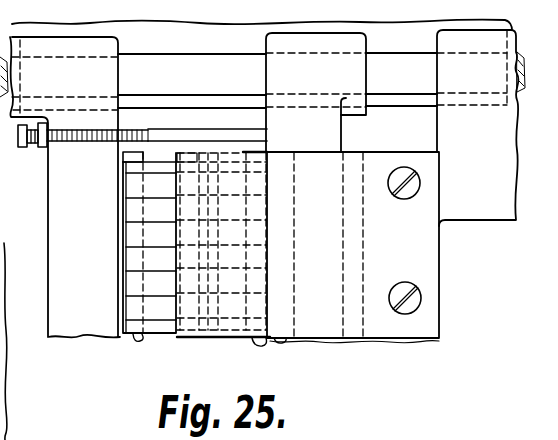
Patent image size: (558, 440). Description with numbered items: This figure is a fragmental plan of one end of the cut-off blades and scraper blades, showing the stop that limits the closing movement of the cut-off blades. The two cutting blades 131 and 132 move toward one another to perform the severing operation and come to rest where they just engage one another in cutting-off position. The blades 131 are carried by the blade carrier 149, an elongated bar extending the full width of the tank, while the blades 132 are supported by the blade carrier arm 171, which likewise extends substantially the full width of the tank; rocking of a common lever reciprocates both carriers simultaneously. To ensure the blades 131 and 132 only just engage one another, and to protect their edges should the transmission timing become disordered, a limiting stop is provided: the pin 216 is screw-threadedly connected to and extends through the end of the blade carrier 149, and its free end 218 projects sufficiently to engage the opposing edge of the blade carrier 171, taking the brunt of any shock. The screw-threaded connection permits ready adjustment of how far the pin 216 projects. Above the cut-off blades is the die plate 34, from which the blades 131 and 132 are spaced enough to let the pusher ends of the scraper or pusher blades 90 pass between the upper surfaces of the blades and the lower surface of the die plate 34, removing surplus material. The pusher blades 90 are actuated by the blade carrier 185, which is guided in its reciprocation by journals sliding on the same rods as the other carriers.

The die plate 34 is at (11, 405).
The scraper or pusher blade 90 is at (230, 323).
The cutting blade 131 is at (162, 328).
The cutting blade 132 is at (227, 320).
The blade carrier 149 is at (65, 187).
The blade carrier arm 171 is at (336, 151).
The blade carrier 185 is at (441, 337).
The pin 216 is at (232, 114).
The free end 218 is at (271, 128).